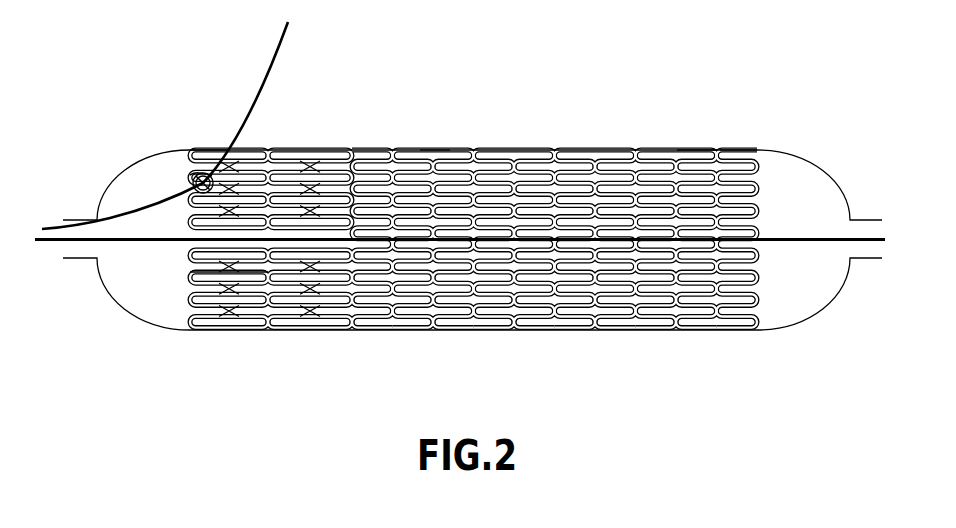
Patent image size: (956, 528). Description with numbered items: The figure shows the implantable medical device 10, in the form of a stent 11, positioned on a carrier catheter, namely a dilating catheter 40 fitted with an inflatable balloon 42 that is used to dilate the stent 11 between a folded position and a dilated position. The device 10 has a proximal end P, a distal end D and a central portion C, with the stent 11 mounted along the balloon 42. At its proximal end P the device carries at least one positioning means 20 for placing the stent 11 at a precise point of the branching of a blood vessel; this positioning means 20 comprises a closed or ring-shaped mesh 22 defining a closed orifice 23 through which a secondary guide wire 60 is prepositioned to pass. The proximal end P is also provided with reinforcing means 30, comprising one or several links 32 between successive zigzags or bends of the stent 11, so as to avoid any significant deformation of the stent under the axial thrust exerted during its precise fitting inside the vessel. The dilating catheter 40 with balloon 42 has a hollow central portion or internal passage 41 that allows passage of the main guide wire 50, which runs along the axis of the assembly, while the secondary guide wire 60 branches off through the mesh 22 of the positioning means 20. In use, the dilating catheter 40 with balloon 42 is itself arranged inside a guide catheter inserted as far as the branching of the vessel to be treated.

The implantable medical device 10 is at (611, 152).
The stent 11 is at (692, 152).
The positioning means 20 is at (187, 170).
The closed mesh 22 is at (193, 184).
The closed orifice 23 is at (201, 172).
The reinforcing means 30 is at (192, 238).
The link 32 is at (192, 276).
The dilating catheter 40 is at (82, 210).
The internal passage 41 is at (85, 256).
The inflatable balloon 42 is at (782, 305).
The main guide wire 50 is at (776, 236).
The secondary guide wire 60 is at (275, 60).
The central portion C is at (426, 141).
The proximal end P is at (184, 136).
The distal end D is at (763, 141).